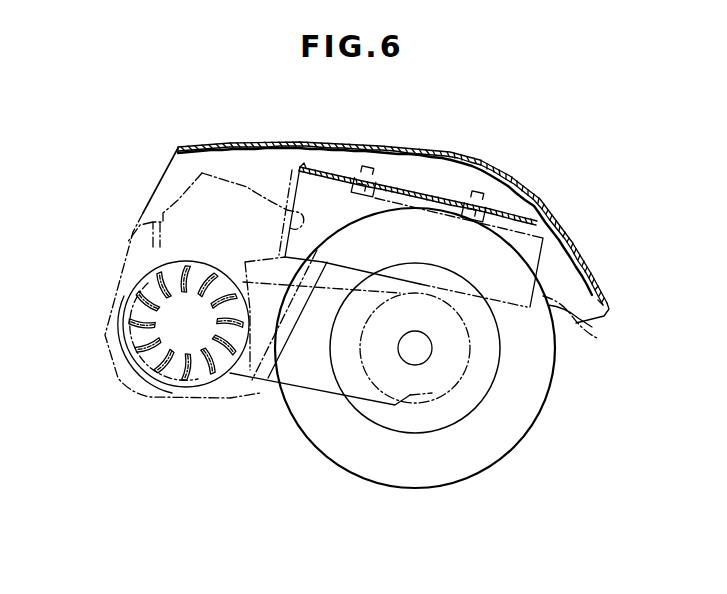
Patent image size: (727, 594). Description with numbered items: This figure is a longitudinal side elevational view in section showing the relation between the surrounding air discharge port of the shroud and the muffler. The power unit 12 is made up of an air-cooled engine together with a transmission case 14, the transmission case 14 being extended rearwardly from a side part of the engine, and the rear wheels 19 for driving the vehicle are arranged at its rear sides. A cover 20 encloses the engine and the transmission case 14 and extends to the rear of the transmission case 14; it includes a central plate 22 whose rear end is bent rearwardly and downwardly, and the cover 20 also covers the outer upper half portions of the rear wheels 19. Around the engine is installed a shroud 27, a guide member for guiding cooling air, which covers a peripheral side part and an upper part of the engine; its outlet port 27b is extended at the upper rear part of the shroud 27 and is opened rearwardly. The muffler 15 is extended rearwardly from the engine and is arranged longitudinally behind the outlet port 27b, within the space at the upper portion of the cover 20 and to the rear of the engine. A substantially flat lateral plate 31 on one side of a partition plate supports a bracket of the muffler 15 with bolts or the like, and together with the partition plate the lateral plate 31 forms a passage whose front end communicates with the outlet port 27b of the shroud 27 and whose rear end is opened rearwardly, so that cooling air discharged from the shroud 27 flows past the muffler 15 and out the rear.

The power unit 12 is at (312, 394).
The transmission case 14 is at (367, 403).
The muffler 15 is at (548, 256).
The rear wheel 19 is at (512, 436).
The cover 20 is at (371, 145).
The central plate 22 is at (262, 143).
The shroud 27 is at (125, 346).
The outlet port 27b is at (287, 232).
The lateral plate 31 is at (517, 213).